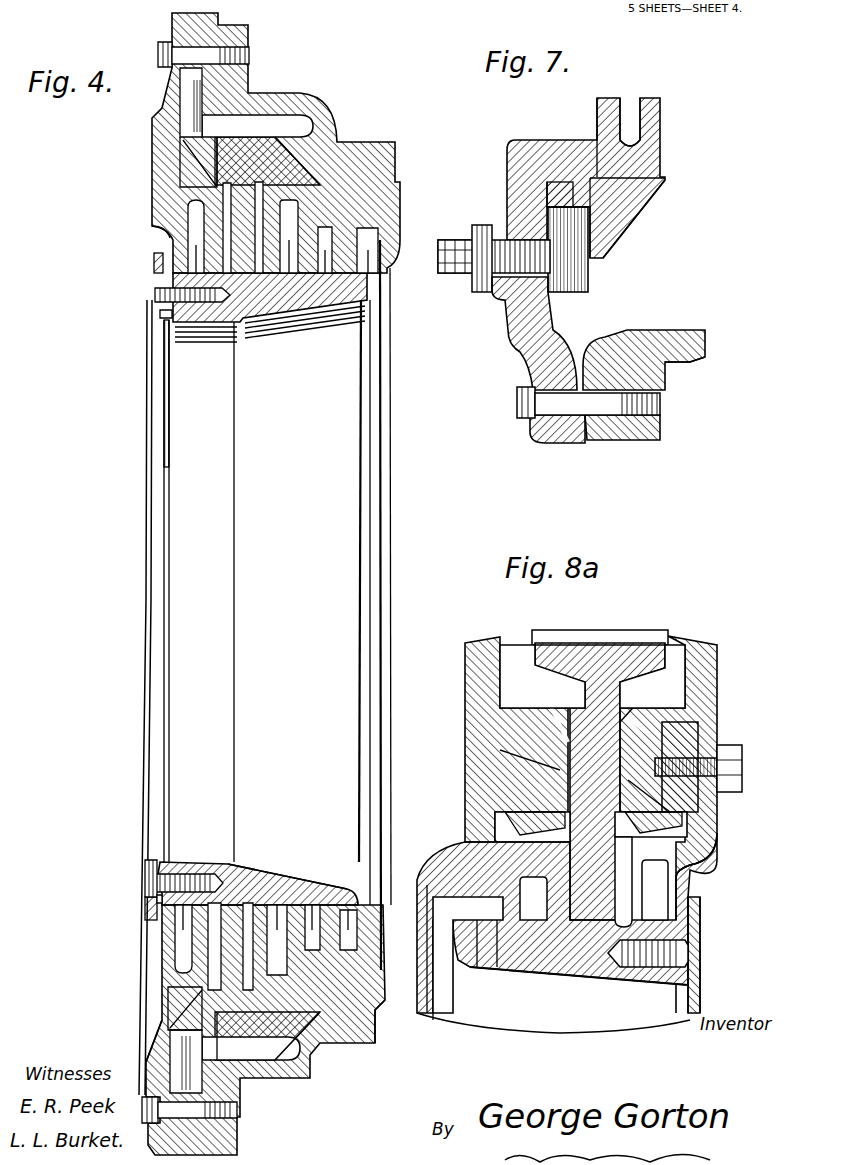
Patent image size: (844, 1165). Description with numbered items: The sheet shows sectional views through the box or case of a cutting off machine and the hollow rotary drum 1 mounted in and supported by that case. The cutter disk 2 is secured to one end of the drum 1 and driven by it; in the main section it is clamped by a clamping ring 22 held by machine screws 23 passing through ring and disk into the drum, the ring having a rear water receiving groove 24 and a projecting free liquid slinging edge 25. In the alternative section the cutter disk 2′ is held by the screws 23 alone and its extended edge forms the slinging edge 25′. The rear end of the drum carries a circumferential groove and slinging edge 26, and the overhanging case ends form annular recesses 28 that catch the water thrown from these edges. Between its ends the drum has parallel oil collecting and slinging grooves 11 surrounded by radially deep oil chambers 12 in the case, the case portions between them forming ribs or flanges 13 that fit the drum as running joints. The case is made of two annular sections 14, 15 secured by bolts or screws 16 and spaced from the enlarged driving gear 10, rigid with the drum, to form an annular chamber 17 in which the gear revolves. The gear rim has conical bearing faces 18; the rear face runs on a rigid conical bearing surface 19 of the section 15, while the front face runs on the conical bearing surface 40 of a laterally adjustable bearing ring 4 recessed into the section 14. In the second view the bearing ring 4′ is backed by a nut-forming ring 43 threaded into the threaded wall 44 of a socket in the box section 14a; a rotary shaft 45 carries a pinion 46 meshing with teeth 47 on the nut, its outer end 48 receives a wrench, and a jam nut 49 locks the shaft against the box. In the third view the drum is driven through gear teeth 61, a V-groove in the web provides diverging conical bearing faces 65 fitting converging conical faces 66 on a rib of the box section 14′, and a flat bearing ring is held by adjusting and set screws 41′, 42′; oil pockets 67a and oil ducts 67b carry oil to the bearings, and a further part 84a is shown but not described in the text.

In FIG. 4, the hollow rotary drum 1 is at (247, 866).
In FIG. 8A, the hollow rotary drum 1 is at (565, 975).
In FIG. 4, the cutter disk 2 is at (172, 780).
In FIG. 8A, the cutter disk 2′ is at (703, 994).
In FIG. 4, the bearing ring 4 is at (183, 153).
In FIG. 7, the bearing ring 4′ is at (628, 232).
In FIG. 4, the driving gear 10 is at (245, 137).
In FIG. 4, the oil collecting and slinging grooves 11 is at (331, 300).
In FIG. 8A, the oil collecting and slinging grooves 11 is at (701, 930).
In FIG. 4, the oil chambers 12 is at (296, 300).
In FIG. 7, the oil chambers 12 is at (642, 137).
In FIG. 8A, the oil chambers 12 is at (686, 885).
In FIG. 4, the ribs or flanges 13 is at (218, 220).
In FIG. 7, the ribs or flanges 13 is at (640, 98).
In FIG. 8A, the ribs or flanges 13 is at (505, 906).
In FIG. 4, the box section 14 is at (148, 1050).
In FIG. 8A, the box section 14′ is at (714, 834).
In FIG. 7, the box section 14a is at (522, 365).
In FIG. 4, the box section 15 is at (380, 1043).
In FIG. 7, the box section 15 is at (692, 362).
In FIG. 8A, the box section 15 is at (462, 844).
In FIG. 4, the bolts or screws 16 is at (249, 60).
In FIG. 7, the bolts or screws 16 is at (662, 415).
In FIG. 4, the annular chamber 17 is at (198, 108).
In FIG. 7, the annular chamber 17 is at (666, 330).
In FIG. 8A, the annular chamber 17 is at (653, 678).
In FIG. 4, the bearing faces 18 is at (290, 153).
In FIG. 4, the bearing surface 19 is at (275, 155).
In FIG. 4, the clamping ring 22 is at (160, 312).
In FIG. 4, the machine screws 23 is at (180, 340).
In FIG. 8A, the machine screws 23 is at (646, 968).
In FIG. 4, the liquid receiving groove 24 is at (168, 272).
In FIG. 4, the liquid slinging edge 25 is at (154, 258).
In FIG. 8A, the liquid slinging edge 25′ is at (702, 900).
In FIG. 4, the annular groove and slinging edge 26 is at (380, 270).
In FIG. 8A, the annular groove and slinging edge 26 is at (476, 968).
In FIG. 4, the annular recesses 28 is at (162, 238).
In FIG. 4, the bearing surface 40 is at (210, 165).
In FIG. 7, the bearing surface 40 is at (650, 215).
In FIG. 8A, the adjusting screws 41′ is at (700, 760).
In FIG. 8A, the set screws 42′ is at (743, 770).
In FIG. 7, the nut-forming ring 43 is at (572, 182).
In FIG. 7, the threaded wall 44 is at (547, 183).
In FIG. 7, the rotary shaft 45 is at (535, 268).
In FIG. 7, the pinion 46 is at (590, 277).
In FIG. 7, the teeth 47 is at (548, 208).
In FIG. 7, the outer end of shaft 48 is at (440, 258).
In FIG. 7, the jam nut 49 is at (484, 293).
In FIG. 8A, the gear teeth 61 is at (585, 643).
In FIG. 8A, the conical bearing faces 65 is at (535, 722).
In FIG. 8A, the conical bearing faces 66 is at (545, 765).
In FIG. 8A, the oil pockets 67a is at (680, 740).
In FIG. 8A, the oil ducts 67b is at (591, 829).
In FIG. 8A, the plate 84a is at (628, 633).